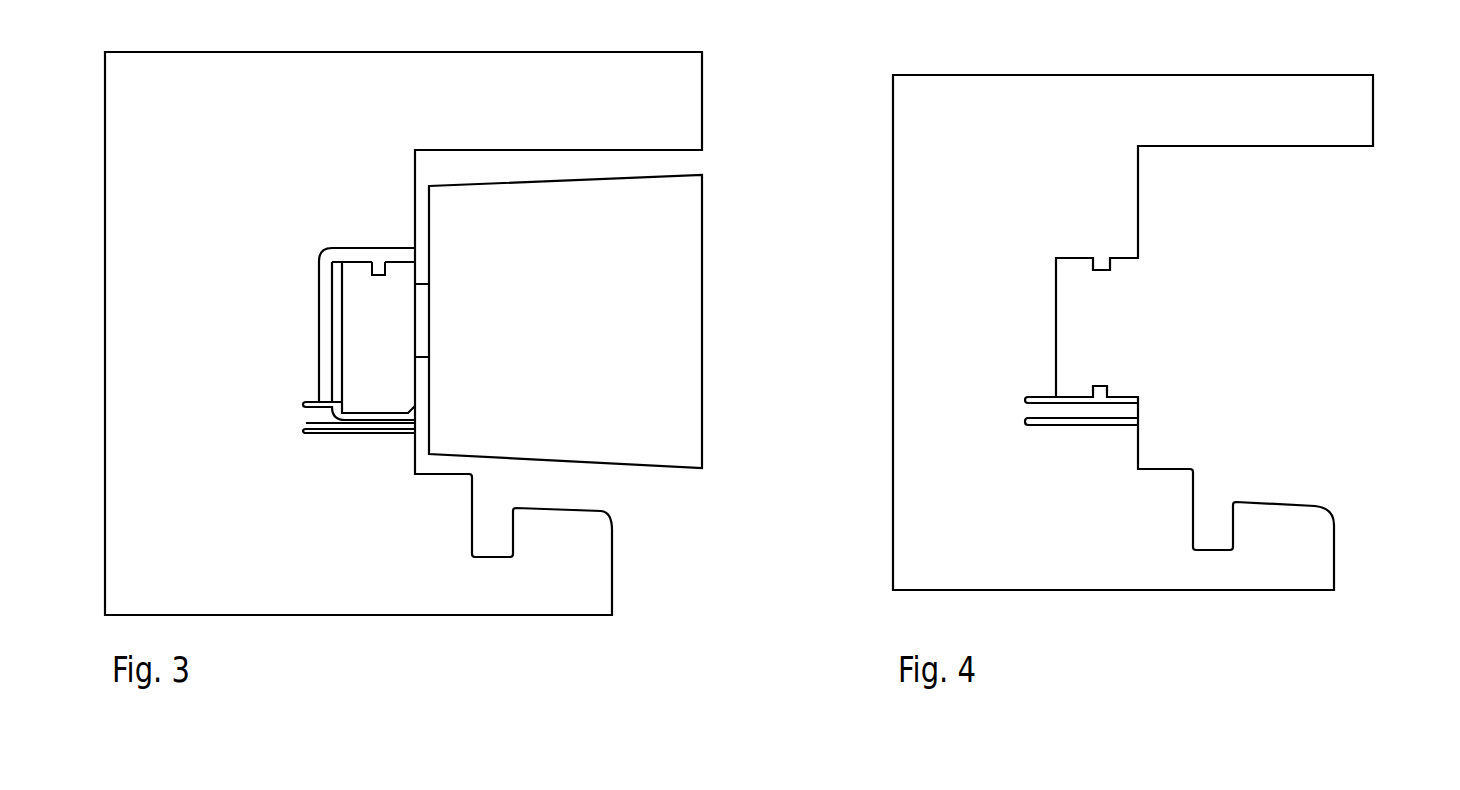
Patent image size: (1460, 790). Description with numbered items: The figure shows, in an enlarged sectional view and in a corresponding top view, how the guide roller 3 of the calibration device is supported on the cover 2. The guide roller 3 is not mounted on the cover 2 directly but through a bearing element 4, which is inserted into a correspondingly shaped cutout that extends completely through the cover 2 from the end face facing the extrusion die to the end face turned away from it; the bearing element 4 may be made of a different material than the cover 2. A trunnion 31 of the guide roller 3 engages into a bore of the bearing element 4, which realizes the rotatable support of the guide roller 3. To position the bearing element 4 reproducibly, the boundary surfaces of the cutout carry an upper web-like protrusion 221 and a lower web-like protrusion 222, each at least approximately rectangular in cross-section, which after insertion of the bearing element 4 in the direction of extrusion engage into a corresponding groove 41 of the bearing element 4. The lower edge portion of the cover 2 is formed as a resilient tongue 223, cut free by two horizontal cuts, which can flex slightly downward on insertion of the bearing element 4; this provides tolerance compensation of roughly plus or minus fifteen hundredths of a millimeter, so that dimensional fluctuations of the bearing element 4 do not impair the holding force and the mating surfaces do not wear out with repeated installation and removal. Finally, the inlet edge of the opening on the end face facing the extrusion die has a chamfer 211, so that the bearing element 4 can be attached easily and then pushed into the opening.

In FIG. 3, the cover 2 is at (688, 107).
In FIG. 4, the cover 2 is at (1358, 112).
In FIG. 3, the guide roller 3 is at (685, 318).
In FIG. 3, the bearing element 4 is at (358, 297).
In FIG. 3, the trunnion 31 is at (422, 314).
In FIG. 3, the groove 41 is at (382, 263).
In FIG. 3, the chamfer 211 is at (325, 323).
In FIG. 3, the upper web-like protrusion 221 is at (373, 263).
In FIG. 4, the upper web-like protrusion 221 is at (1100, 262).
In FIG. 3, the lower web-like protrusion 222 is at (378, 408).
In FIG. 4, the lower web-like protrusion 222 is at (1105, 390).
In FIG. 3, the resilient tongue 223 is at (330, 413).
In FIG. 4, the resilient tongue 223 is at (1071, 410).